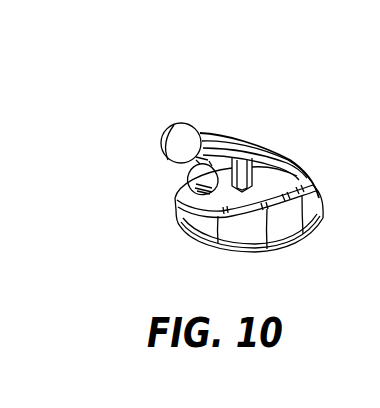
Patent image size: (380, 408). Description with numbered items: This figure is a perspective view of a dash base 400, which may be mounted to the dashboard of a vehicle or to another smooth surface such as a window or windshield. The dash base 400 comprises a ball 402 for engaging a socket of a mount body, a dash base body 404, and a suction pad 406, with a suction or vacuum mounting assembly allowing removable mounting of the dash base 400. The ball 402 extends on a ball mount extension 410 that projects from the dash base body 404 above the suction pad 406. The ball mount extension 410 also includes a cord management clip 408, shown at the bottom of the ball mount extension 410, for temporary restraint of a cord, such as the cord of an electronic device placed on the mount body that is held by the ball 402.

The dash base 400 is at (116, 157).
The ball 402 is at (167, 130).
The dash base body 404 is at (176, 200).
The suction pad 406 is at (183, 243).
The cord management clip 408 is at (187, 183).
The ball mount extension 410 is at (235, 141).